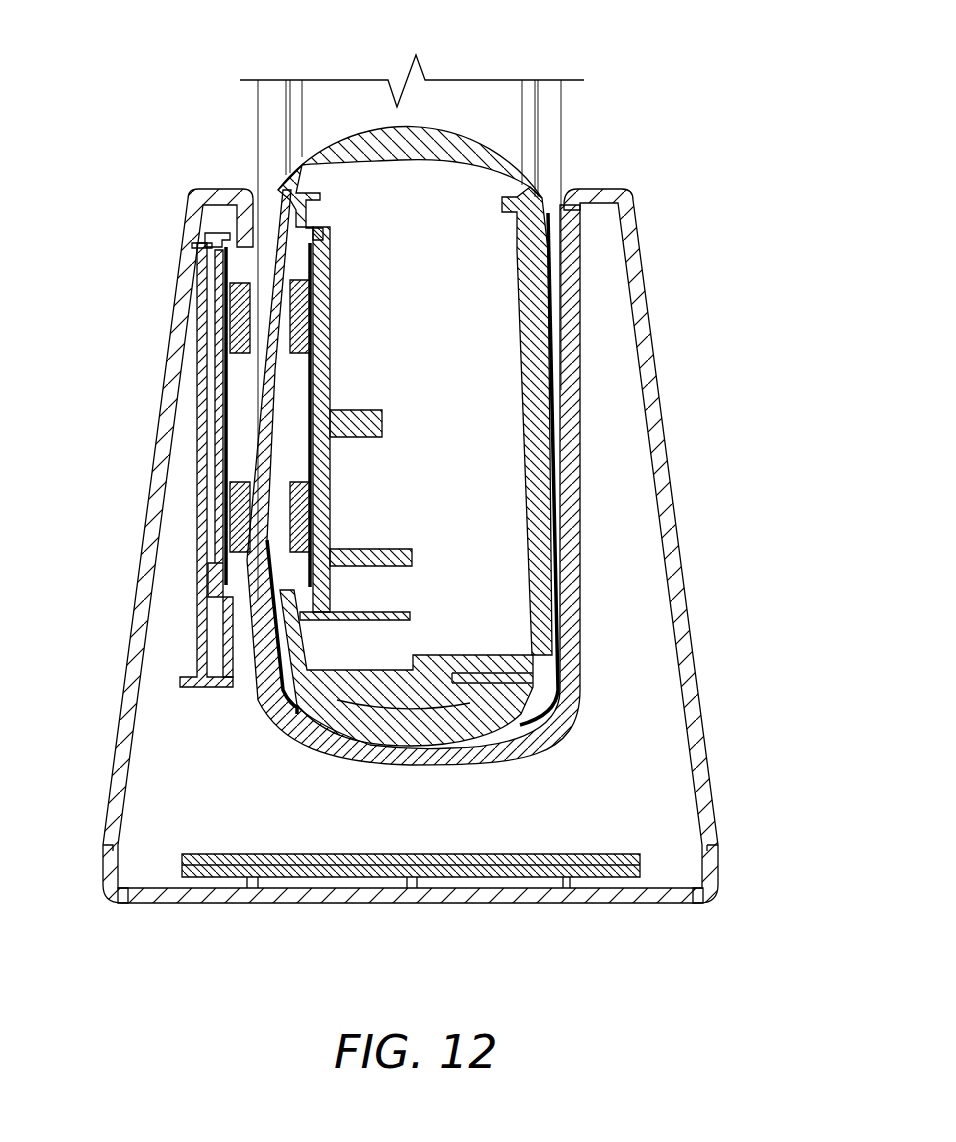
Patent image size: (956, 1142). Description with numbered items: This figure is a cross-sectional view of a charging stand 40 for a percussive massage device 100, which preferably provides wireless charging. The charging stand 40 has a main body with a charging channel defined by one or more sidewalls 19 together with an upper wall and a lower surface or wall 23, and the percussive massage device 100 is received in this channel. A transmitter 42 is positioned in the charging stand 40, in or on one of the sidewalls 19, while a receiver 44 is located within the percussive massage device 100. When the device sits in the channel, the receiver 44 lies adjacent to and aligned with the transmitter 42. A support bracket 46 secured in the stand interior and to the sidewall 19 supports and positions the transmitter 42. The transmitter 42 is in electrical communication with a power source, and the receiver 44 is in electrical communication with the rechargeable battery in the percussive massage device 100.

The sidewall 19 is at (247, 216).
The lower surface or wall 23 is at (503, 737).
The charging stand 40 is at (666, 112).
The transmitter 42 is at (217, 307).
The receiver 44 is at (302, 323).
The support bracket 46 is at (215, 427).
The percussive massage device 100 is at (488, 160).